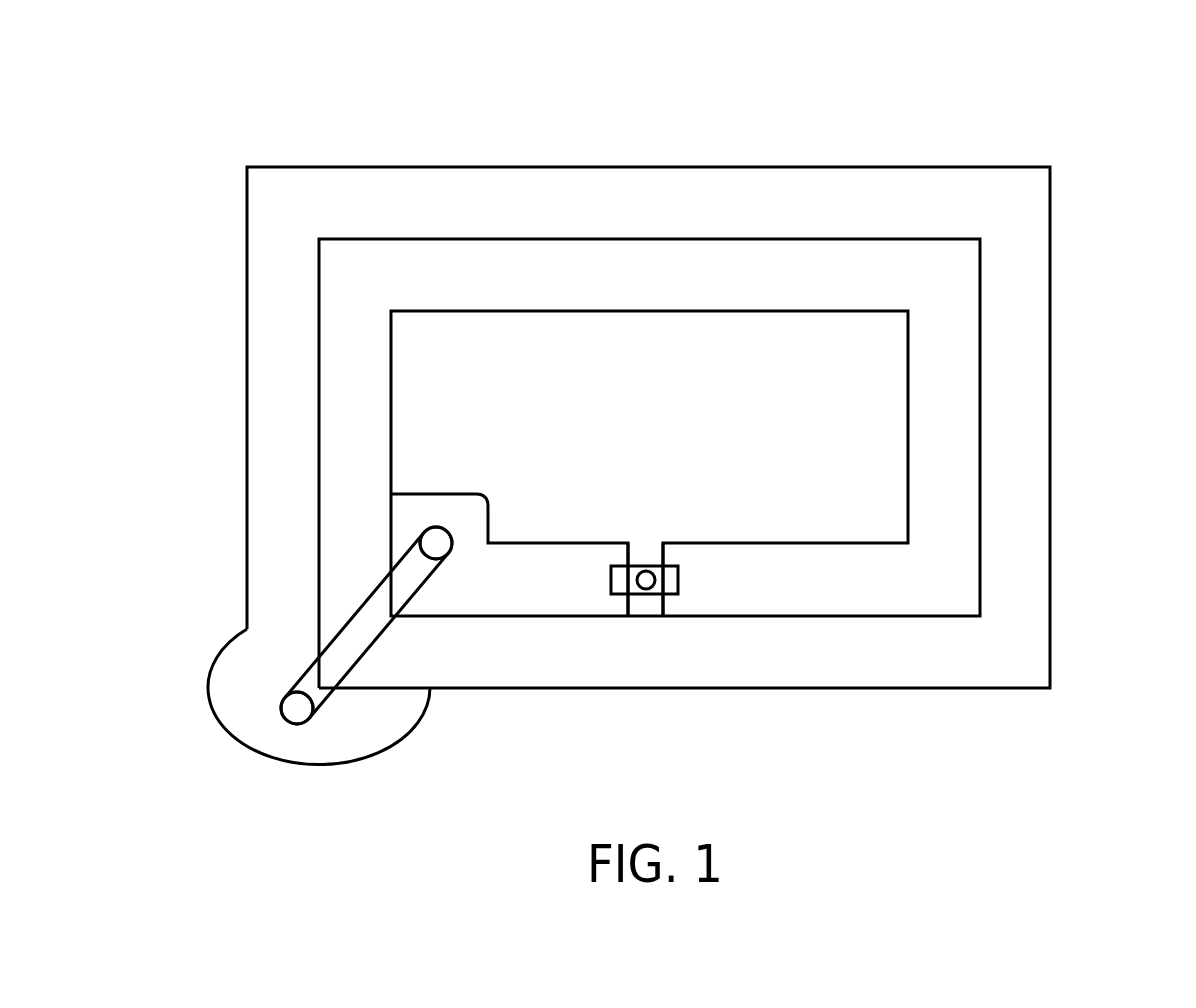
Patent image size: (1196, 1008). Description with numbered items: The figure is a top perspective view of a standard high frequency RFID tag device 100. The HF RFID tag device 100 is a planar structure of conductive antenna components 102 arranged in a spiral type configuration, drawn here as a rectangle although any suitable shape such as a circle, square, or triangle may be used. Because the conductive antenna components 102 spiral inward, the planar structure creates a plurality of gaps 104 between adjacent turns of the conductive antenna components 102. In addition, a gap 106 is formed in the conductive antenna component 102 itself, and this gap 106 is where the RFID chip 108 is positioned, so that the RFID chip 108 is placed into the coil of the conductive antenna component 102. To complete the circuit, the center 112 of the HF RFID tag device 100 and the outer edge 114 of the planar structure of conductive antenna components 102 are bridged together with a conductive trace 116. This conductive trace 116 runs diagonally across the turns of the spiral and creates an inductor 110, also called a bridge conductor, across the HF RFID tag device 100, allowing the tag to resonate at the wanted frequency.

The HF RFID tag device 100 is at (953, 130).
The conductive antenna components 102 is at (1008, 428).
The gaps 104 is at (982, 303).
The gap 106 is at (646, 607).
The RFID chip 108 is at (637, 566).
The inductor 110 is at (352, 655).
The center 112 is at (435, 517).
The outer edge 114 is at (288, 727).
The conductive trace 116 is at (437, 542).